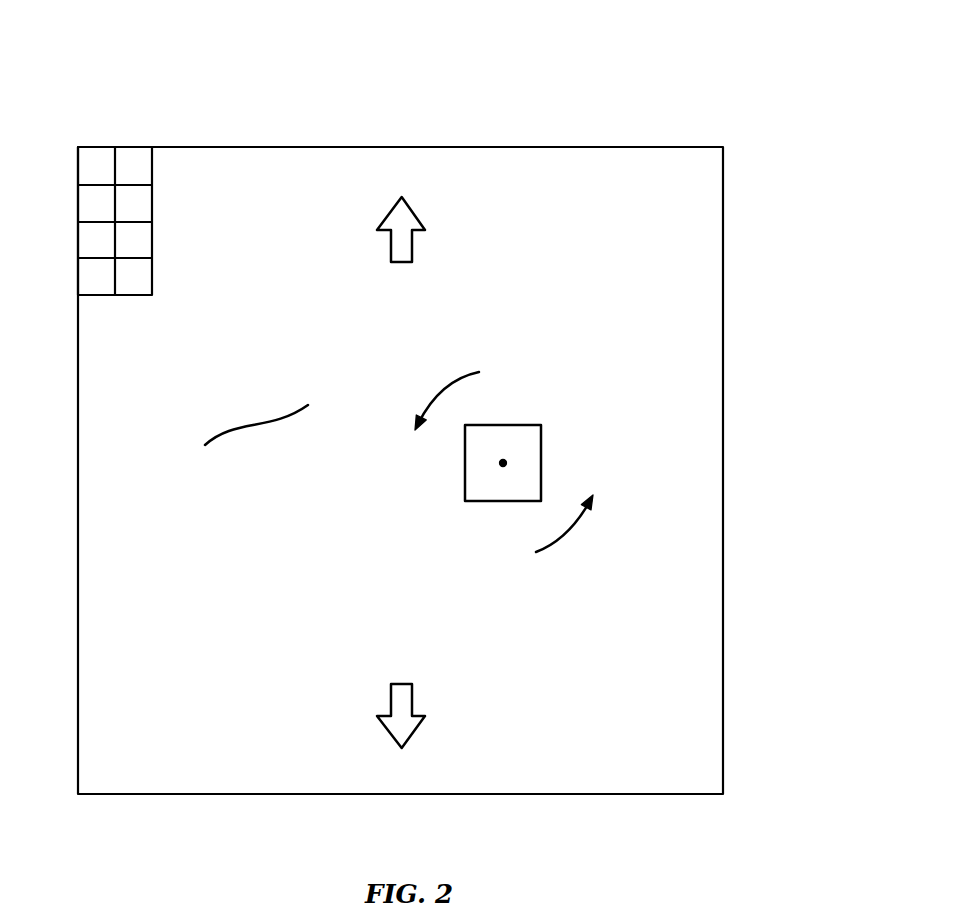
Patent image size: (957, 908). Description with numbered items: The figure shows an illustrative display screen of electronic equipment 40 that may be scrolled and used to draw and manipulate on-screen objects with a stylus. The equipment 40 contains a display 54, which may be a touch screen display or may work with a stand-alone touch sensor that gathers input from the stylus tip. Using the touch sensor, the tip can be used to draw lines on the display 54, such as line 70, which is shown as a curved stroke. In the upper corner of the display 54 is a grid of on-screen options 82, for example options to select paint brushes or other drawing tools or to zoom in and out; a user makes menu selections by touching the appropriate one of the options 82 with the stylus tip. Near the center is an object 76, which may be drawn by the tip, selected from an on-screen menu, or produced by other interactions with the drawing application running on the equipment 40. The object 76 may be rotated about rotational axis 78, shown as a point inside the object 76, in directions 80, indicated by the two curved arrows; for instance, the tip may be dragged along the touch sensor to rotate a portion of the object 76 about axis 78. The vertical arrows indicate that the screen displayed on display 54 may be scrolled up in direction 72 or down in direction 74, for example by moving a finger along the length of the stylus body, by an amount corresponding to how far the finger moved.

The electronic equipment 40 is at (680, 74).
The display 54 is at (724, 247).
The on-screen options 82 is at (91, 207).
The direction 72 is at (412, 243).
The direction 74 is at (412, 697).
The line 70 is at (253, 427).
The object 76 is at (541, 437).
The rotational axis 78 is at (503, 466).
The directions 80 is at (440, 392).